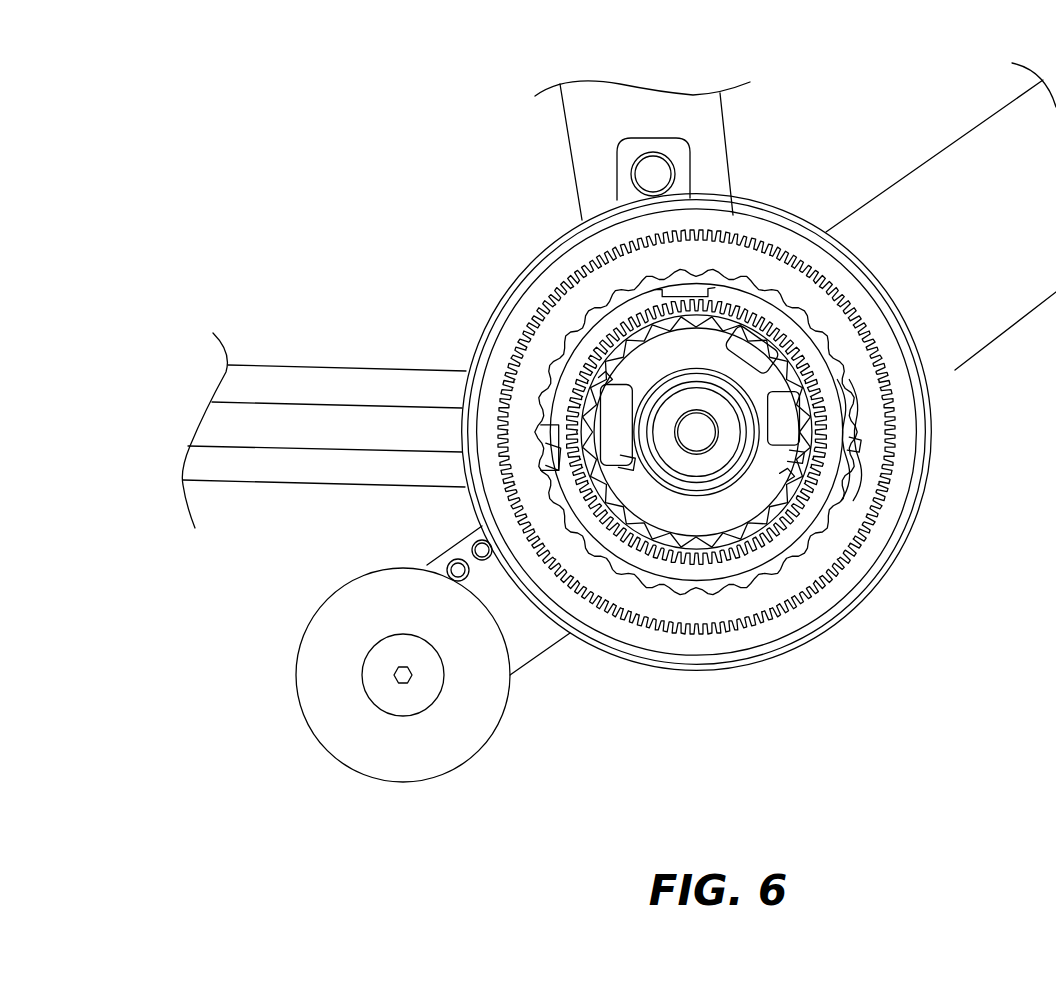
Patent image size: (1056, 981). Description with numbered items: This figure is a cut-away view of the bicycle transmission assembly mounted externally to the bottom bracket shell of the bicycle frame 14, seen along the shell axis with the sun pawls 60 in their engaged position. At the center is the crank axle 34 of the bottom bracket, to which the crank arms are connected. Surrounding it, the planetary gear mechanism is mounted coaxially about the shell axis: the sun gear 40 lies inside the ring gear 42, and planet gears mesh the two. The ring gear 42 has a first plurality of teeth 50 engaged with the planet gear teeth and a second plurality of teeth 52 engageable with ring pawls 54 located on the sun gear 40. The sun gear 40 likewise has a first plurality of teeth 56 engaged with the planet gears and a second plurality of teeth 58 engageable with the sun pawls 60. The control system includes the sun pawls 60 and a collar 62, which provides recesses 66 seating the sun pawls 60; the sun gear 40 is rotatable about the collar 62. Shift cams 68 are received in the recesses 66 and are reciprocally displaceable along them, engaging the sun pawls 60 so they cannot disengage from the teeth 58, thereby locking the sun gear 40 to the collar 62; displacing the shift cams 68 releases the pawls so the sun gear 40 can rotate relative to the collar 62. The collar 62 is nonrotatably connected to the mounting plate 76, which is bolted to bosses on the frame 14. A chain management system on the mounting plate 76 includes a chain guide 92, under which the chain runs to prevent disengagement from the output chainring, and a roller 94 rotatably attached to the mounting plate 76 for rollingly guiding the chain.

The bicycle frame 14 is at (965, 163).
The crank axle 34 is at (728, 432).
The sun gear 40 is at (567, 380).
The ring gear 42 is at (833, 535).
The first plurality of teeth 50 is at (773, 250).
The second plurality of teeth 52 is at (545, 443).
The ring pawls 54 is at (790, 410).
The first plurality of teeth 56 is at (700, 558).
The second plurality of teeth 58 is at (733, 507).
The sun pawls 60 is at (598, 378).
The collar 62 is at (770, 548).
The recesses 66 is at (780, 410).
The shift cams 68 is at (628, 460).
The mounting plate 76 is at (523, 630).
The chain guide 92 is at (655, 177).
The roller 94 is at (450, 735).